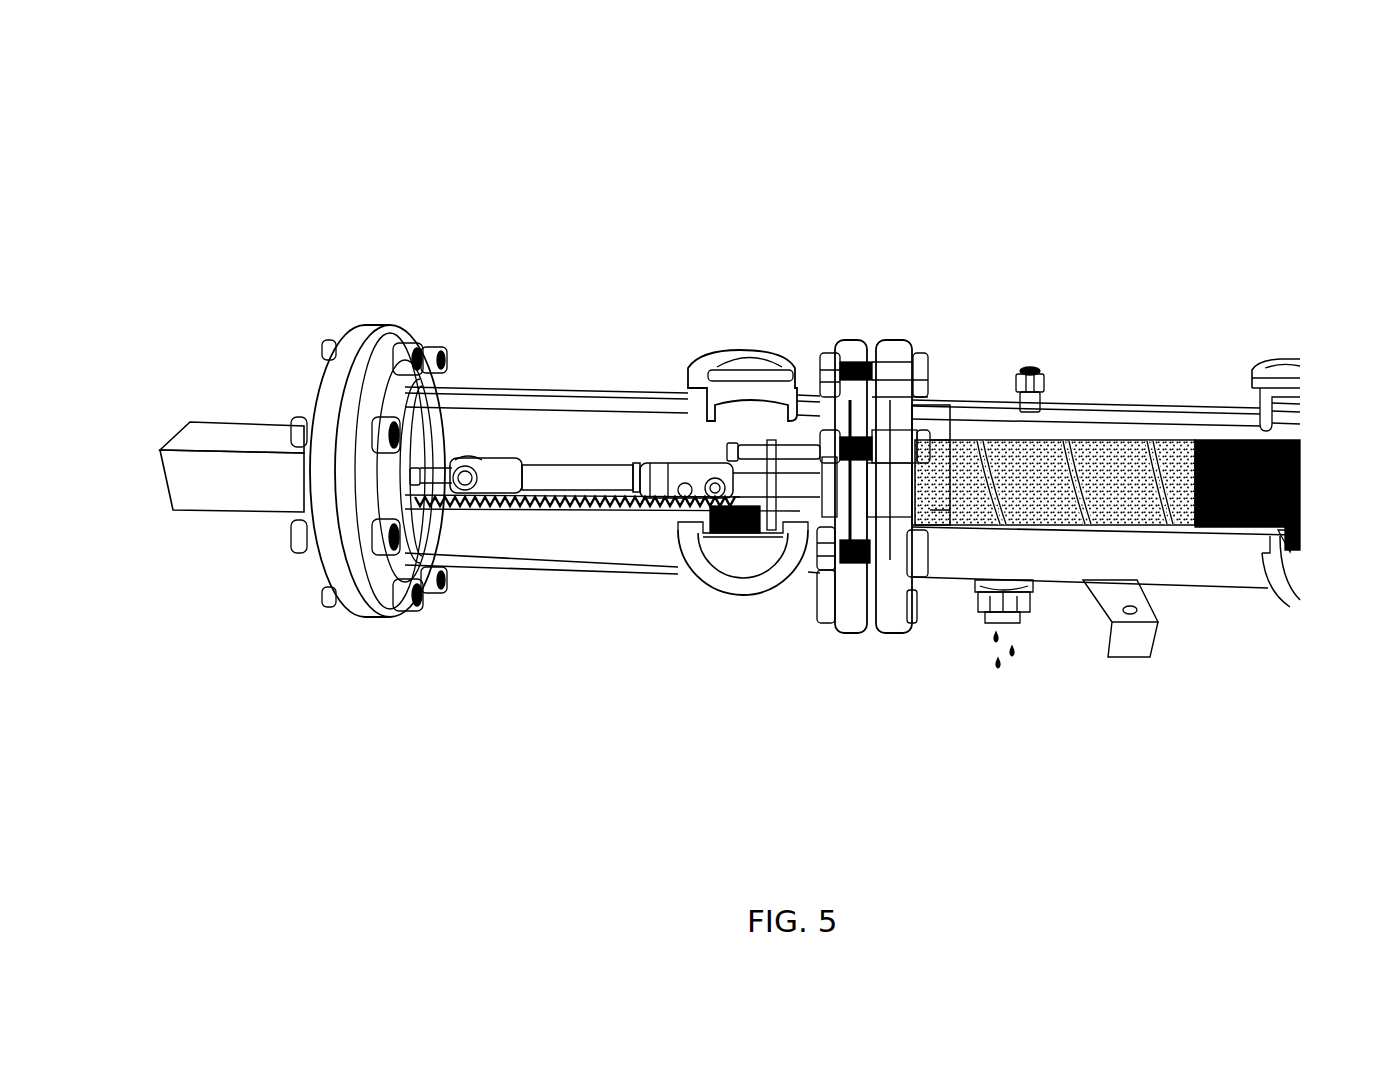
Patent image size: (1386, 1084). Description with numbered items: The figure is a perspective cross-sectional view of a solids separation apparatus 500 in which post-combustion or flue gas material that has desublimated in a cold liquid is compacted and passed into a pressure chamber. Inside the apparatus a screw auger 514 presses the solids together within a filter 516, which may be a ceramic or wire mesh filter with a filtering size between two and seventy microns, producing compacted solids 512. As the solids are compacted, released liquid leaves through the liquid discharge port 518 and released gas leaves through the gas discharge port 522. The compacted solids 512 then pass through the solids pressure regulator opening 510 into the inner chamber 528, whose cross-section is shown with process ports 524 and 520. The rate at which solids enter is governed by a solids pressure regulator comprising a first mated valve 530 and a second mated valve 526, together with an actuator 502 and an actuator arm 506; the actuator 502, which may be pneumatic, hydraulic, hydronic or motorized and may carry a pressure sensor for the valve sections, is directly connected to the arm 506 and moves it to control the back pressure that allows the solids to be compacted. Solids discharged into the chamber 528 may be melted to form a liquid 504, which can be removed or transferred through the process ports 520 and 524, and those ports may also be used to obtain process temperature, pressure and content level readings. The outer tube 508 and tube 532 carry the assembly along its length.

The solids separation apparatus 500 is at (250, 106).
The actuator 502 is at (247, 430).
The liquid 504 is at (600, 508).
The actuator arm 506 is at (570, 472).
The outer housing tube 508 is at (1212, 570).
The solids pressure regulator opening 510 is at (852, 493).
The compacted solids 512 is at (960, 430).
The screw auger 514 is at (1073, 445).
The filter 516 is at (1230, 433).
The liquid discharge port 518 is at (1018, 652).
The process port 520 is at (735, 563).
The gas discharge port 522 is at (1028, 368).
The process port 524 is at (735, 372).
The second mated valve 526 is at (877, 473).
The inner chamber 528 is at (461, 415).
The first mated valve 530 is at (833, 463).
The outer tube 532 is at (1145, 428).